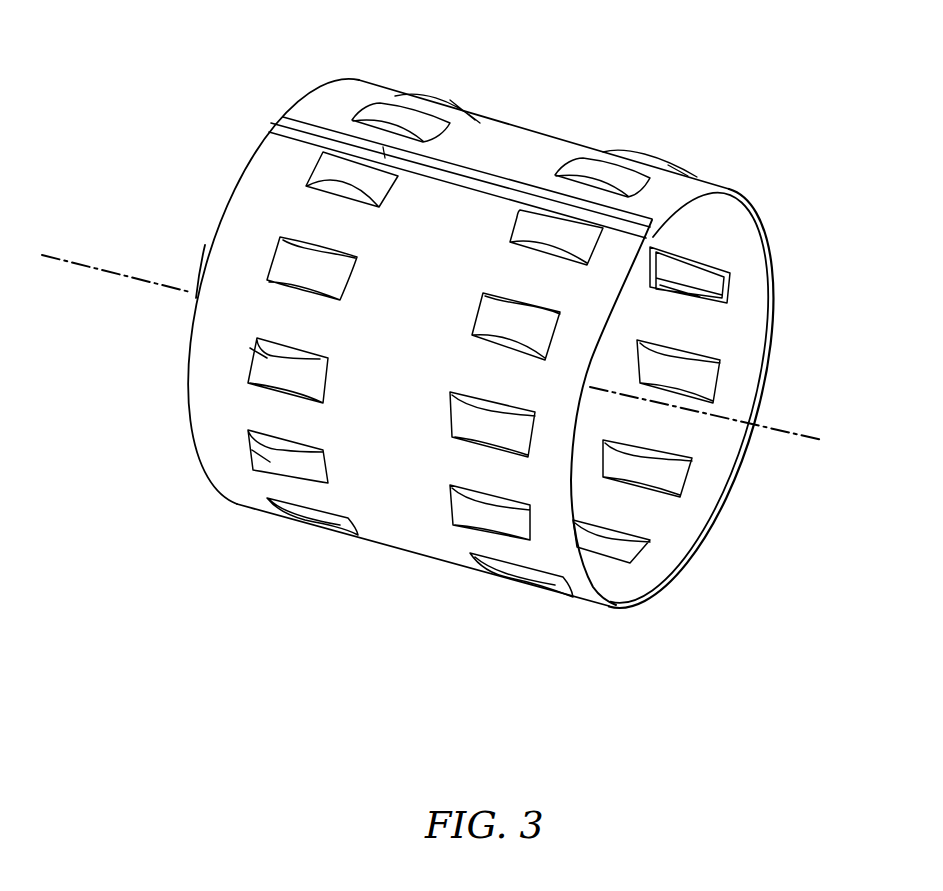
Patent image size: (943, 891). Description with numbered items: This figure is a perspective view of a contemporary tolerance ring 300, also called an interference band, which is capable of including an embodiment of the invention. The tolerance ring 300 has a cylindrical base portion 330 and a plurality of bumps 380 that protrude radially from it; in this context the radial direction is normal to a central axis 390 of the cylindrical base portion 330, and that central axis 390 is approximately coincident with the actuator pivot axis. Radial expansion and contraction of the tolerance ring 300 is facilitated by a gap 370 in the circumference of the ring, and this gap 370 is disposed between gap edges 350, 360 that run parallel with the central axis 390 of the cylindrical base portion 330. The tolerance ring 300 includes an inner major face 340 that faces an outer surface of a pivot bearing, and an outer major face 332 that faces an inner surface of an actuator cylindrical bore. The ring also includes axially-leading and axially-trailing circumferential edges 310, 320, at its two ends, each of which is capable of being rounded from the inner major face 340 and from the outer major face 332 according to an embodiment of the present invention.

The tolerance ring 300 is at (641, 627).
The axially-leading circumferential edge 310 is at (710, 527).
The axially-trailing circumferential edge 320 is at (220, 207).
The cylindrical base portion 330 is at (417, 527).
The outer major face 332 is at (233, 255).
The inner major face 340 is at (750, 243).
The gap edge 350 is at (508, 178).
The gap edge 360 is at (508, 178).
The gap 370 is at (275, 117).
The bumps 380 is at (392, 110).
The central axis 390 is at (777, 427).